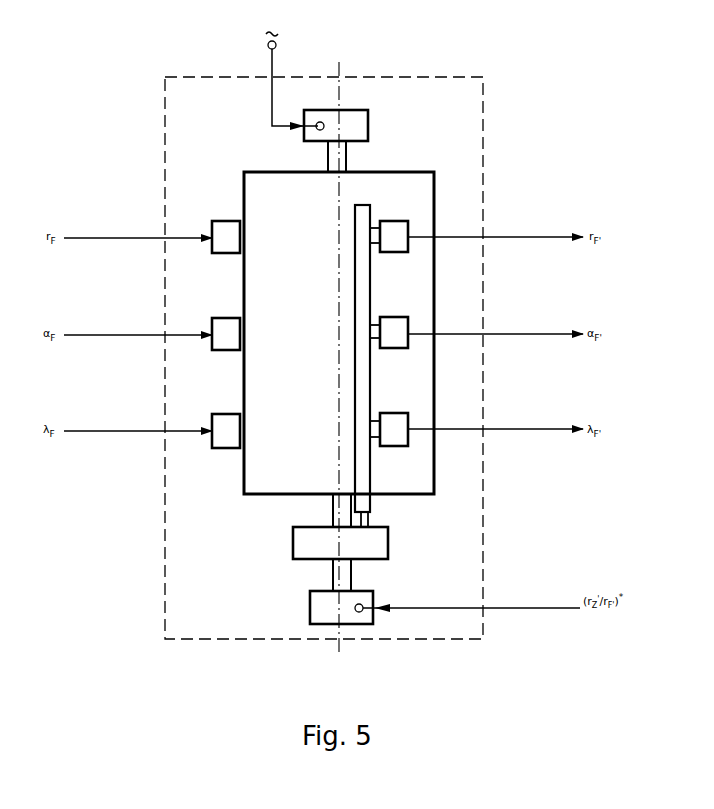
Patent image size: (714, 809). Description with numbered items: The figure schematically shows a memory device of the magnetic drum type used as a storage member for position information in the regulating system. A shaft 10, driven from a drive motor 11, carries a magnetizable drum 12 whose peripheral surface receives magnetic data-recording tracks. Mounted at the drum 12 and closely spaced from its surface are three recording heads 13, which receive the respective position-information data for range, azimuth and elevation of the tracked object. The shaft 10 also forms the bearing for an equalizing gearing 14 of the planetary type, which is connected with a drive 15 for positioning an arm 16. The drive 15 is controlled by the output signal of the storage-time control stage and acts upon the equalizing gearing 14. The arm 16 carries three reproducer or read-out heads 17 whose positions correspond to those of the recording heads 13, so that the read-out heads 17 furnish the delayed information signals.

The shaft 10 is at (337, 157).
The drive motor 11 is at (360, 122).
The magnetizable drum 12 is at (265, 187).
The recording heads 13 is at (222, 228).
The equalizing gearing 14 is at (307, 543).
The drive 15 is at (325, 608).
The arm 16 is at (365, 288).
The read-out heads 17 is at (398, 227).